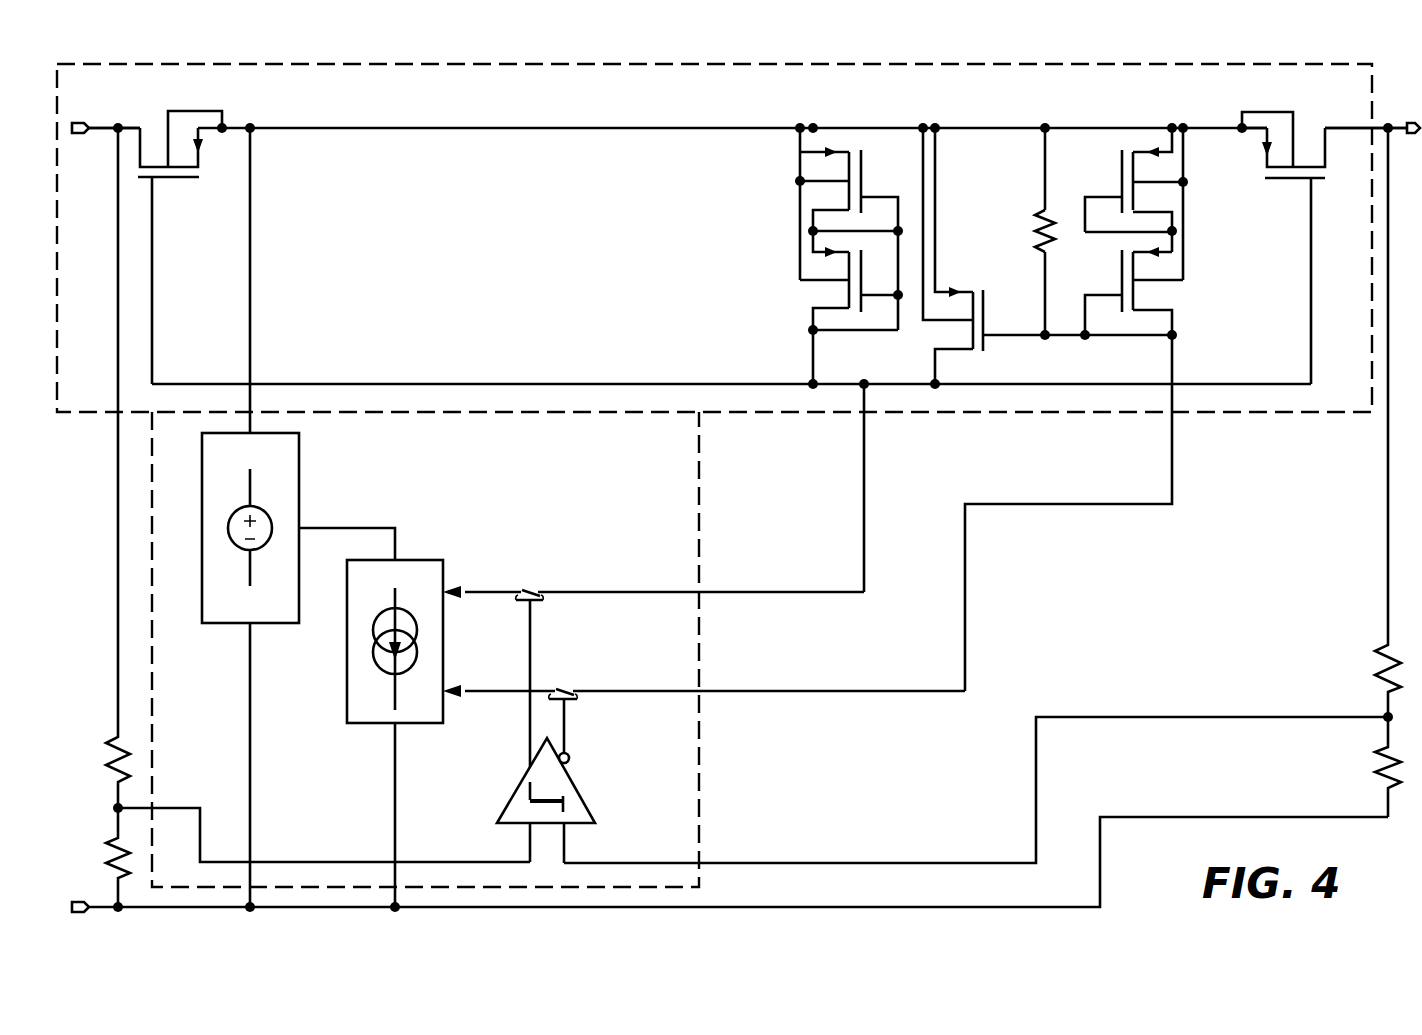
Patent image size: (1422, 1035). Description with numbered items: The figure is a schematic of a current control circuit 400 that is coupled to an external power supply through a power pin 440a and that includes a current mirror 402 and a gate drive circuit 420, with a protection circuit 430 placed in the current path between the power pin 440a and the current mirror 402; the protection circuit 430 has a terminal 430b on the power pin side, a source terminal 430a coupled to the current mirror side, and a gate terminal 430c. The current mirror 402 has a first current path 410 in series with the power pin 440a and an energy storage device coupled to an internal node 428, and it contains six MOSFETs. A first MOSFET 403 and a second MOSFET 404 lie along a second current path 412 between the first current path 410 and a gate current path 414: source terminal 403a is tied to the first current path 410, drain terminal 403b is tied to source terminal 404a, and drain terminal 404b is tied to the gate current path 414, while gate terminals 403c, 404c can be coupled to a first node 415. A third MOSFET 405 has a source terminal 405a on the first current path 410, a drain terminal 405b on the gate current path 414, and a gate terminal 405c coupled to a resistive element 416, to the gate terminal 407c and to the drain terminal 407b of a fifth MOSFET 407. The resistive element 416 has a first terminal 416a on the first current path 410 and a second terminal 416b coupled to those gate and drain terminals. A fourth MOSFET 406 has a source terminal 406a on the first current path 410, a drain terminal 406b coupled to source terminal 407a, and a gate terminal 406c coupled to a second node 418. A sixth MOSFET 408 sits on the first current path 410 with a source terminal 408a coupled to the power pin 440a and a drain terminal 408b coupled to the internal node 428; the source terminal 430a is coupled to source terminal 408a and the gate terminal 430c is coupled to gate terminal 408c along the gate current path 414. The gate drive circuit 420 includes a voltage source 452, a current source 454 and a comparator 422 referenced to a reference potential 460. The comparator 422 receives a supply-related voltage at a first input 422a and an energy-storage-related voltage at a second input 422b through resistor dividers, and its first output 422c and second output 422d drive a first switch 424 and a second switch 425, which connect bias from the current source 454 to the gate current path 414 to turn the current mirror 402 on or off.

The current control circuit 400 is at (846, 55).
The current mirror 402 is at (657, 96).
The first MOSFET 403 is at (818, 185).
The source terminal 403a is at (812, 151).
The drain terminal 403b is at (812, 222).
The gate terminal 403c is at (878, 197).
The second MOSFET 404 is at (815, 290).
The source terminal 404a is at (812, 250).
The drain terminal 404b is at (812, 318).
The gate terminal 404c is at (878, 298).
The third MOSFET 405 is at (955, 332).
The source terminal 405a is at (938, 288).
The drain terminal 405b is at (937, 367).
The gate terminal 405c is at (985, 340).
The fourth MOSFET 406 is at (1160, 190).
The source terminal 406a is at (1174, 140).
The drain terminal 406b is at (1174, 226).
The gate terminal 406c is at (1107, 197).
The fifth MOSFET 407 is at (1165, 290).
The source terminal 407a is at (1175, 255).
The drain terminal 407b is at (1174, 325).
The gate terminal 407c is at (1107, 295).
The sixth MOSFET 408 is at (1307, 140).
The source terminal 408a is at (1240, 126).
The drain terminal 408b is at (1337, 133).
The gate terminal 408c is at (1310, 188).
The first current path 410 is at (436, 127).
The second current path 412 is at (811, 357).
The gate current path 414 is at (537, 383).
The first node 415 is at (812, 232).
The resistive element 416 is at (1038, 245).
The first terminal 416a is at (1043, 192).
The second terminal 416b is at (1043, 272).
The second node 418 is at (1175, 232).
The gate drive circuit 420 is at (699, 772).
The comparator 422 is at (580, 780).
The first input 422a is at (527, 832).
The second input 422b is at (568, 832).
The first output 422c is at (527, 767).
The second output 422d is at (569, 755).
The first switch 424 is at (522, 590).
The second switch 425 is at (556, 689).
The internal node 428 is at (1388, 125).
The protection circuit 430 is at (153, 127).
The source terminal 430a is at (225, 126).
The source terminal of transistor 430 430b is at (127, 126).
The gate terminal 430c is at (155, 190).
The power pin 440a is at (116, 132).
The voltage source 452 is at (300, 455).
The current source 454 is at (346, 677).
The reference potential 460 is at (995, 906).